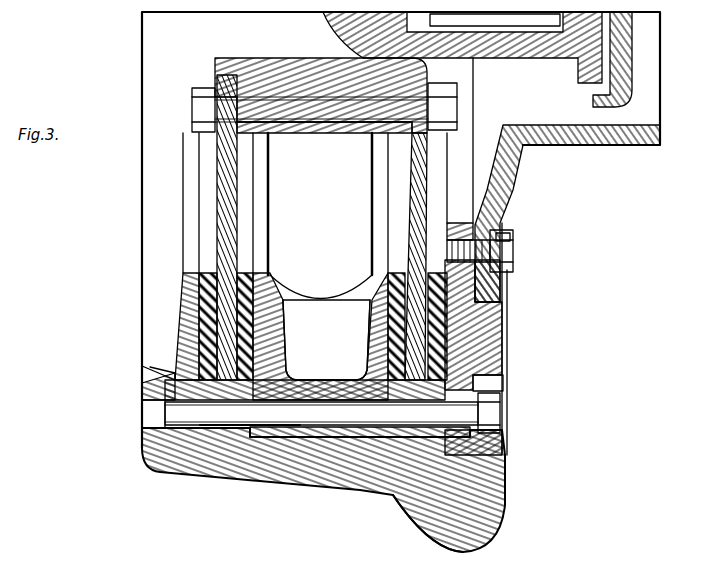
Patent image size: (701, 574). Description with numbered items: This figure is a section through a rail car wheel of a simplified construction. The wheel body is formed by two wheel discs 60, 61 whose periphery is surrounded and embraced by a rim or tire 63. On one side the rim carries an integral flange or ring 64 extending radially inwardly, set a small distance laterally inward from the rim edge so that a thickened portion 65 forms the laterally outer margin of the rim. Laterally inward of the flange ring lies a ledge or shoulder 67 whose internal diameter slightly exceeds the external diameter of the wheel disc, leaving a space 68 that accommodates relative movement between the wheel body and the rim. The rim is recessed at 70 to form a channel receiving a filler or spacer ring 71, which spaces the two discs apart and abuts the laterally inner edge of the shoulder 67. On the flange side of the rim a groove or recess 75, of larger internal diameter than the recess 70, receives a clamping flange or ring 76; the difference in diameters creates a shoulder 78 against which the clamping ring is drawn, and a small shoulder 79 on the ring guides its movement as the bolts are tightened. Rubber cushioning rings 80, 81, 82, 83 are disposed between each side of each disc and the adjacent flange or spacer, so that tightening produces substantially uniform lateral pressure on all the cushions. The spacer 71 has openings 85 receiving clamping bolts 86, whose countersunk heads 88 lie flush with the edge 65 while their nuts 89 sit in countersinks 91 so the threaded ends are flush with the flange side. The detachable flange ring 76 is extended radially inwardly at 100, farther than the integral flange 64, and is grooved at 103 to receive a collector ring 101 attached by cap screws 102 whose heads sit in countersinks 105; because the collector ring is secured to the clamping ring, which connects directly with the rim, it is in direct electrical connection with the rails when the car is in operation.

The wheel disc 60 is at (222, 147).
The wheel disc 61 is at (422, 155).
The rim or tire 63 is at (232, 430).
The integral flange or ring 64 is at (182, 305).
The thickened portion 65 is at (155, 370).
The ledge or shoulder 67 is at (277, 338).
The space 68 is at (152, 388).
The recess 70 is at (280, 433).
The filler or spacer ring 71 is at (303, 300).
The groove or recess 75 is at (488, 477).
The clamping flange or ring 76 is at (500, 355).
The shoulder 78 is at (407, 493).
The small shoulder 79 is at (365, 490).
The rubber cushioning ring 80 is at (205, 290).
The rubber cushioning ring 81 is at (242, 273).
The rubber cushioning ring 82 is at (394, 270).
The rubber cushioning ring 83 is at (440, 222).
The openings 85 is at (308, 400).
The clamping bolts 86 is at (233, 425).
The countersunk heads 88 is at (150, 410).
The nuts 89 is at (504, 384).
The recesses or countersinks 91 is at (500, 440).
The radially inward extension 100 is at (462, 240).
The collector ring 101 is at (540, 148).
The cap screws 102 is at (513, 240).
The groove 103 is at (503, 290).
The recesses or countersinks 105 is at (500, 232).